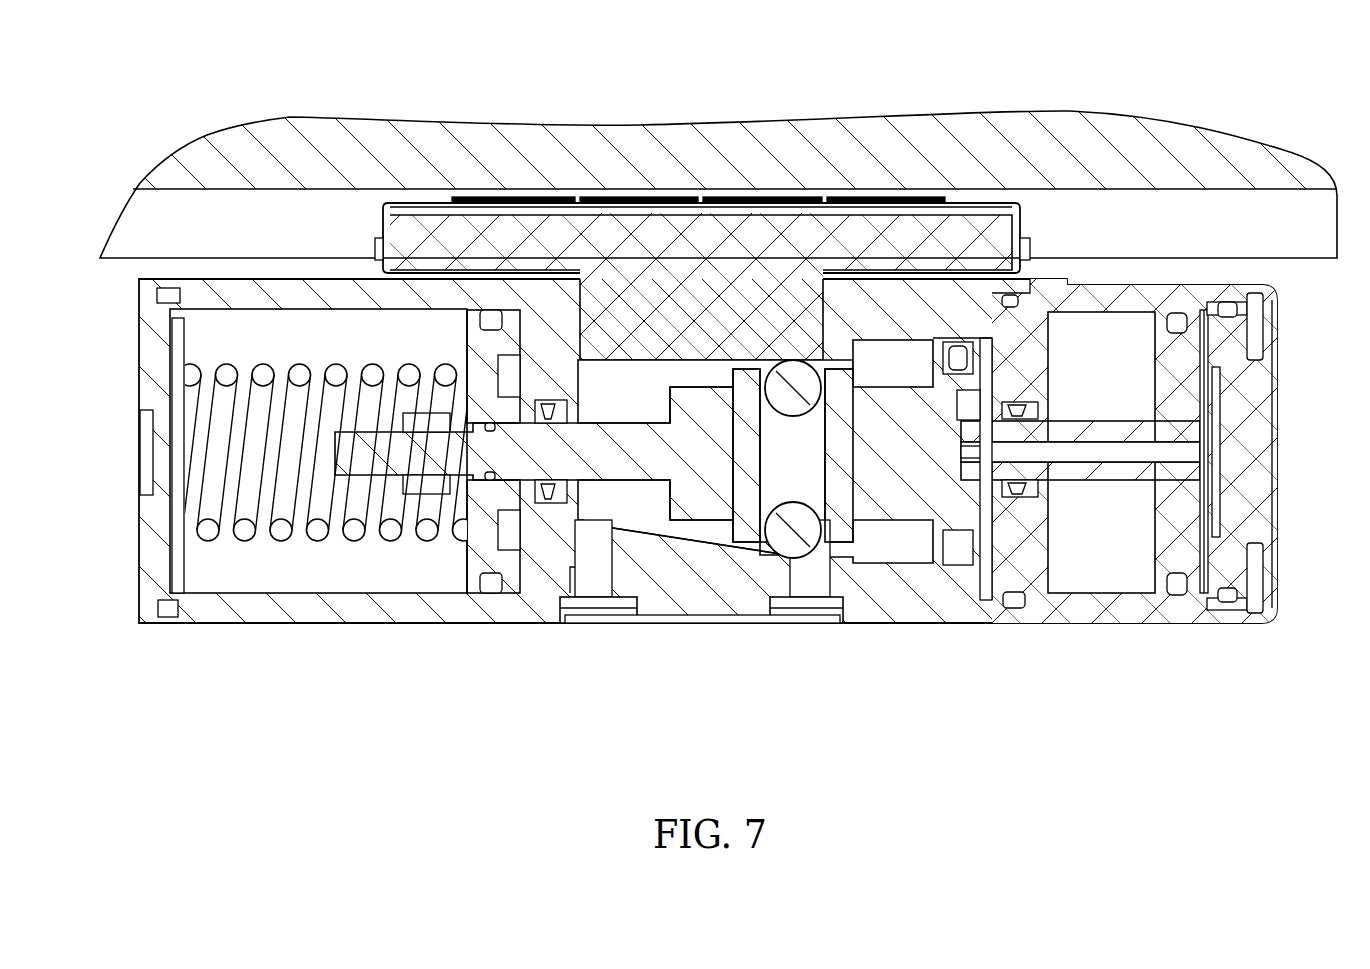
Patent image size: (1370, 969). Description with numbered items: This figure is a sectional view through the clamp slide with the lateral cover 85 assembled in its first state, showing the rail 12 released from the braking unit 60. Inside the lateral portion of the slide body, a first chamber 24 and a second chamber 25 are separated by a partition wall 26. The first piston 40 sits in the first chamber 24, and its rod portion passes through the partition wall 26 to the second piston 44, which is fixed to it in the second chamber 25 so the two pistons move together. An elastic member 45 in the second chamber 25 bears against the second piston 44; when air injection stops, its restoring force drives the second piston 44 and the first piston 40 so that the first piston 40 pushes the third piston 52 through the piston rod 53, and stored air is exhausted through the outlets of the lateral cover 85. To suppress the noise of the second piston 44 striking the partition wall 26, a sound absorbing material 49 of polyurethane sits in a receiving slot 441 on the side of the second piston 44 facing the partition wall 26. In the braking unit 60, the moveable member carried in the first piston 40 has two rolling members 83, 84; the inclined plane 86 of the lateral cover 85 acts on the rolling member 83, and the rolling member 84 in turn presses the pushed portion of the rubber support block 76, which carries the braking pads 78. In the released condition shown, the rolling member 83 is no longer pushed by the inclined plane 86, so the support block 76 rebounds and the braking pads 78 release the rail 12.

The rail 12 is at (1140, 140).
The first chamber 24 is at (870, 545).
The second chamber 25 is at (375, 573).
The partition wall 26 is at (565, 322).
The first piston 40 is at (910, 540).
The second piston 44 is at (470, 558).
The receiving slot 441 is at (515, 525).
The elastic member 45 is at (318, 530).
The sound absorbing material 49 is at (520, 505).
The third piston 52 is at (1160, 543).
The piston rod 53 is at (1082, 475).
The braking unit 60 is at (632, 640).
The support block 76 is at (968, 225).
The braking pad 78 is at (522, 205).
The rolling member 83 is at (812, 560).
The rolling member 84 is at (800, 370).
The lateral cover 85 is at (683, 600).
The inclined plane 86 is at (740, 550).